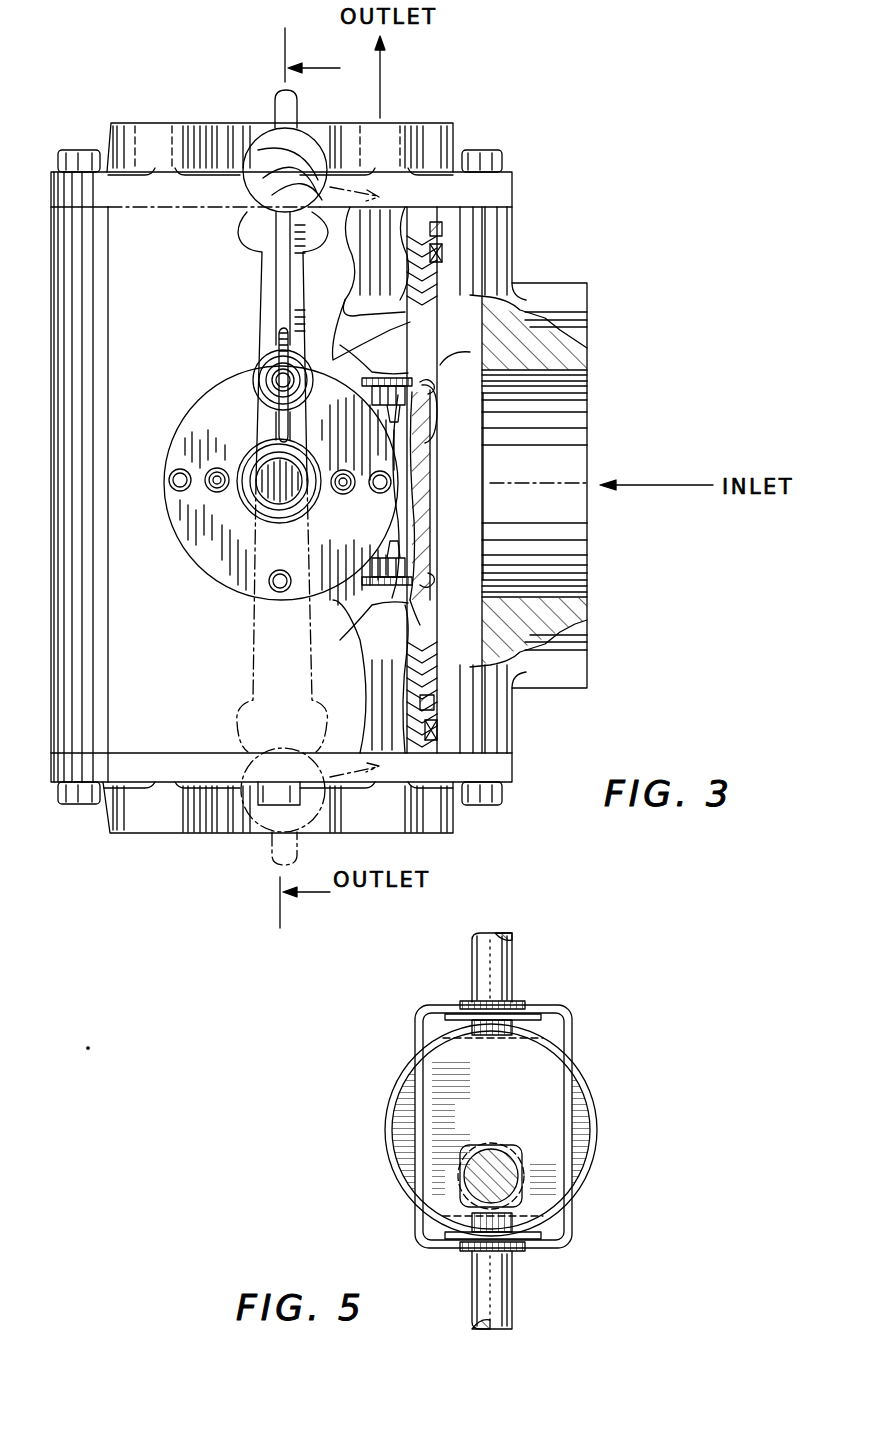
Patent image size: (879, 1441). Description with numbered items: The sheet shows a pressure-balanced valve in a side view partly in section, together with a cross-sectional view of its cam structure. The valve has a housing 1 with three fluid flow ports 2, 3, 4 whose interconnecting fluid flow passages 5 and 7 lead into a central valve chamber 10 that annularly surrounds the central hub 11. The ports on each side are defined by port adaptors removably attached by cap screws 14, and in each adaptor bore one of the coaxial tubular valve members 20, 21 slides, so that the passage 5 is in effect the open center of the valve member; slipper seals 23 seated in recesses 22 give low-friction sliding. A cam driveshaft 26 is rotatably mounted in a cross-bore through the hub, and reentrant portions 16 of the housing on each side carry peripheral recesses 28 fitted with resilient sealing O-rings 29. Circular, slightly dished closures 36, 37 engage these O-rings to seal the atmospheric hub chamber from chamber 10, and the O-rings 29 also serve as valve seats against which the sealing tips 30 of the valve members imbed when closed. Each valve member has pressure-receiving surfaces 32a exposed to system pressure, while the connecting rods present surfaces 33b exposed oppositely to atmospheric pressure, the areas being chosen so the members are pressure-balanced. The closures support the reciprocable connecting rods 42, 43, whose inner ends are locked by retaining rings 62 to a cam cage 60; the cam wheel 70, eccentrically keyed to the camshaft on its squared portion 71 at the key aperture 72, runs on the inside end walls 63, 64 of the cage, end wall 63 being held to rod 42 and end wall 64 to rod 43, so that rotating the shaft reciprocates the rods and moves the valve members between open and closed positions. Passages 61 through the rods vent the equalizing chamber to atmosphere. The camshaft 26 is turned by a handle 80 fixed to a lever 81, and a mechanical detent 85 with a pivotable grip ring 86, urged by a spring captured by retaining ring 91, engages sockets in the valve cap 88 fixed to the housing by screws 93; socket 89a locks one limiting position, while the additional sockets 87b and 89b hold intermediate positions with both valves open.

In FIG. 3, the housing 1 is at (560, 285).
In FIG. 3, the fluid flow port 2 is at (200, 123).
In FIG. 3, the fluid flow port 3 is at (235, 835).
In FIG. 3, the fluid flow port 4 is at (618, 588).
In FIG. 3, the fluid flow passage 5 is at (385, 305).
In FIG. 3, the fluid flow passage 7 is at (520, 534).
In FIG. 3, the central valve chamber 10 is at (437, 499).
In FIG. 3, the central hub 11 is at (430, 363).
In FIG. 3, the cap screws 14 is at (95, 150).
In FIG. 3, the reentrant portions 16 is at (412, 432).
In FIG. 3, the tubular valve member 20 is at (415, 243).
In FIG. 3, the tubular valve member 21 is at (398, 663).
In FIG. 3, the recesses 22 is at (436, 238).
In FIG. 3, the slipper seals 23 is at (432, 256).
In FIG. 3, the cam driveshaft 26 is at (282, 490).
In FIG. 5, the cam driveshaft 26 is at (500, 1148).
In FIG. 3, the peripheral recesses 28 is at (430, 415).
In FIG. 3, the sealing O-rings 29 is at (433, 395).
In FIG. 3, the sealing tips 30 is at (415, 325).
In FIG. 3, the pressure-receiving surfaces 32a is at (425, 608).
In FIG. 5, the pressure-receiving surfaces 33b is at (495, 1040).
In FIG. 3, the closure 36 is at (360, 366).
In FIG. 3, the closure 37 is at (375, 600).
In FIG. 5, the connecting rod 42 is at (512, 965).
In FIG. 5, the connecting rod 43 is at (512, 1303).
In FIG. 5, the cam cage 60 is at (572, 1022).
In FIG. 5, the passages 61 is at (497, 935).
In FIG. 5, the retaining rings 62 is at (465, 1003).
In FIG. 5, the end wall 63 is at (445, 1020).
In FIG. 5, the end wall 64 is at (540, 1243).
In FIG. 5, the cam wheel 70 is at (395, 1160).
In FIG. 5, the squared portion 71 is at (466, 1190).
In FIG. 5, the key aperture 72 is at (522, 1152).
In FIG. 3, the handle 80 is at (265, 145).
In FIG. 3, the lever 81 is at (258, 290).
In FIG. 3, the mechanical detent 85 is at (272, 386).
In FIG. 3, the grip ring 86 is at (276, 336).
In FIG. 3, the socket 87b is at (180, 490).
In FIG. 3, the valve cap 88 is at (235, 375).
In FIG. 3, the socket 89a is at (275, 588).
In FIG. 3, the socket 89b is at (380, 492).
In FIG. 3, the retaining ring 91 is at (272, 396).
In FIG. 3, the screws 93 is at (215, 492).